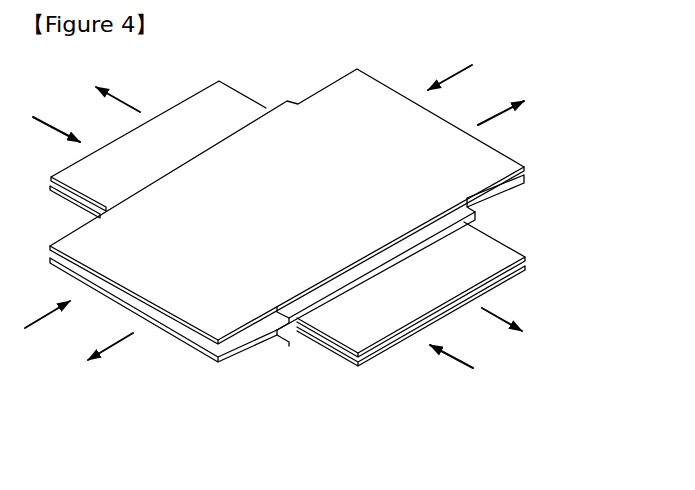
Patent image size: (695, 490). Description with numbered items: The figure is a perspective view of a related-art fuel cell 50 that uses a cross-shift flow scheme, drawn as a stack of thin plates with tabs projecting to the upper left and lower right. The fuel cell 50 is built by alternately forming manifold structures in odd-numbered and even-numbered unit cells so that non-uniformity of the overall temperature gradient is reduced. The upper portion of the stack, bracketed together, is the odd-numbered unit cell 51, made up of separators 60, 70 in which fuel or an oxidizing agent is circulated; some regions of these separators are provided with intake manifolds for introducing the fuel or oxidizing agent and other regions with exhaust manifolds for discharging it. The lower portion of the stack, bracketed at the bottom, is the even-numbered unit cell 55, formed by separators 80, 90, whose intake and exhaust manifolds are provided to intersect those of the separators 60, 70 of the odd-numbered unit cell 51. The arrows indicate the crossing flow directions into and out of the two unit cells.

The fuel cell 50 is at (533, 141).
The odd-numbered unit cell 51 is at (349, 213).
The separator 60 is at (521, 167).
The separator 70 is at (490, 250).
The even-numbered unit cell 55 is at (287, 342).
The separator 80 is at (238, 336).
The separator 90 is at (340, 343).